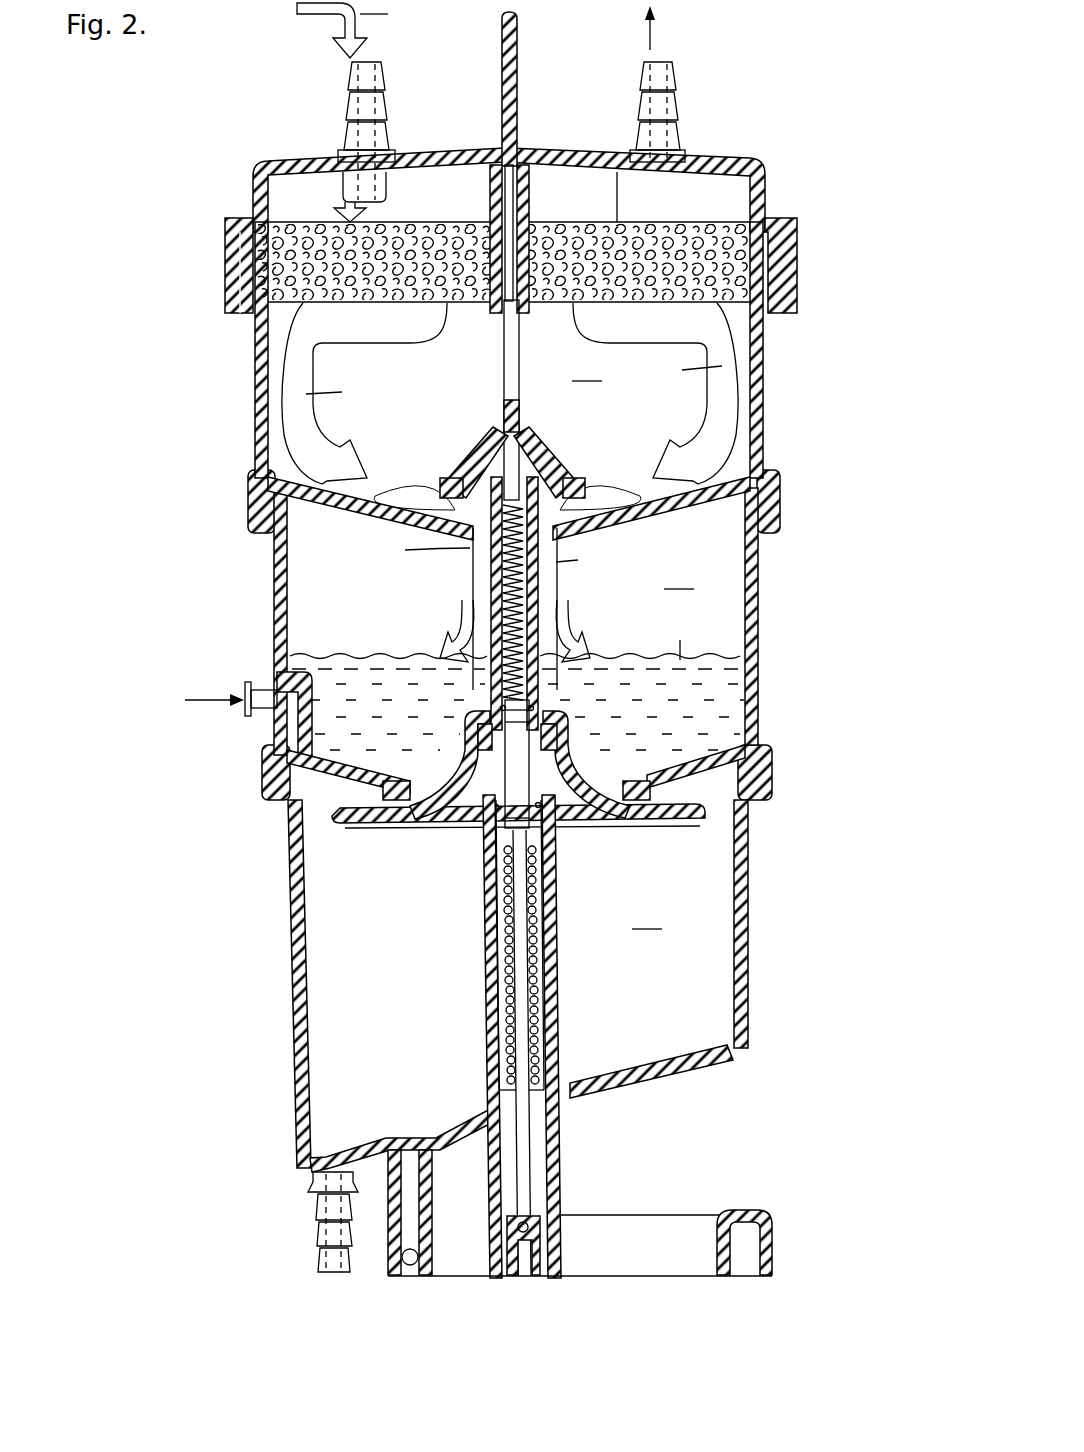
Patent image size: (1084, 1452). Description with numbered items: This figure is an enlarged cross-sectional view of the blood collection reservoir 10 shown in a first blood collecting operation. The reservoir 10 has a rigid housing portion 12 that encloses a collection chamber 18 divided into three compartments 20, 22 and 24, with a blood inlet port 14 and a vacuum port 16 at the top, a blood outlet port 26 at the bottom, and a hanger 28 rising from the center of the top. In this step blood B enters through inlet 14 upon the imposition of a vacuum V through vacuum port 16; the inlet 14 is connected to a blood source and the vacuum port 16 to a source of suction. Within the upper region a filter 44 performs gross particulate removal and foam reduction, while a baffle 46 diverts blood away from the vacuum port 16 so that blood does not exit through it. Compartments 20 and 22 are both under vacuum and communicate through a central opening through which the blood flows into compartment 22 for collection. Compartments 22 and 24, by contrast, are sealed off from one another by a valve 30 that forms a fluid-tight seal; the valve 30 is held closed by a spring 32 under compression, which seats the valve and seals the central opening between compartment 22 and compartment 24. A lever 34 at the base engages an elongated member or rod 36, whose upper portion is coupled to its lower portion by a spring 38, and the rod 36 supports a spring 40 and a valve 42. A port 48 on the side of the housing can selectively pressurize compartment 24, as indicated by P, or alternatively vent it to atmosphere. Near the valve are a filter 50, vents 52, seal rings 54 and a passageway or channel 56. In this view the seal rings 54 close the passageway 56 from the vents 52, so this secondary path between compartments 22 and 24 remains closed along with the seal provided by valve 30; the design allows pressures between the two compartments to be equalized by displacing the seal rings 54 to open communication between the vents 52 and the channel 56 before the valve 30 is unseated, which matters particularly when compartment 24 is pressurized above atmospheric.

The blood collection reservoir 10 is at (790, 162).
The rigid housing portion 12 is at (255, 456).
The blood inlet port 14 is at (348, 116).
The vacuum port 16 is at (676, 100).
The collection chamber 18 is at (692, 407).
The compartment 20 is at (510, 406).
The compartment 22 is at (517, 654).
The compartment 24 is at (521, 1035).
The blood outlet port 26 is at (316, 1240).
The hanger 28 is at (518, 42).
The valve 30 is at (370, 830).
The spring 32 is at (502, 1028).
The lever 34 is at (712, 1214).
The elongated member or rod 36 is at (504, 370).
The spring 38 is at (504, 572).
The spring 40 is at (492, 906).
The valve 42 is at (480, 463).
The filter 44 is at (450, 228).
The baffle 46 is at (617, 194).
The port 48 is at (246, 720).
The filter 50 is at (466, 760).
The vents 52 is at (478, 736).
The seal rings 54 is at (500, 716).
The passageway or channel 56 is at (500, 614).